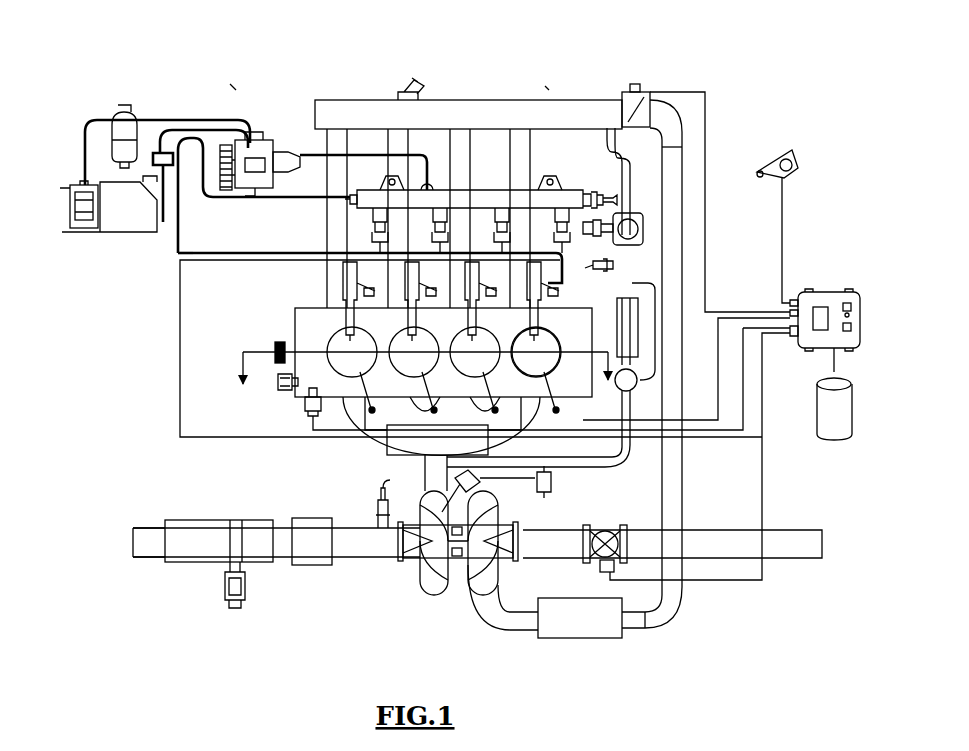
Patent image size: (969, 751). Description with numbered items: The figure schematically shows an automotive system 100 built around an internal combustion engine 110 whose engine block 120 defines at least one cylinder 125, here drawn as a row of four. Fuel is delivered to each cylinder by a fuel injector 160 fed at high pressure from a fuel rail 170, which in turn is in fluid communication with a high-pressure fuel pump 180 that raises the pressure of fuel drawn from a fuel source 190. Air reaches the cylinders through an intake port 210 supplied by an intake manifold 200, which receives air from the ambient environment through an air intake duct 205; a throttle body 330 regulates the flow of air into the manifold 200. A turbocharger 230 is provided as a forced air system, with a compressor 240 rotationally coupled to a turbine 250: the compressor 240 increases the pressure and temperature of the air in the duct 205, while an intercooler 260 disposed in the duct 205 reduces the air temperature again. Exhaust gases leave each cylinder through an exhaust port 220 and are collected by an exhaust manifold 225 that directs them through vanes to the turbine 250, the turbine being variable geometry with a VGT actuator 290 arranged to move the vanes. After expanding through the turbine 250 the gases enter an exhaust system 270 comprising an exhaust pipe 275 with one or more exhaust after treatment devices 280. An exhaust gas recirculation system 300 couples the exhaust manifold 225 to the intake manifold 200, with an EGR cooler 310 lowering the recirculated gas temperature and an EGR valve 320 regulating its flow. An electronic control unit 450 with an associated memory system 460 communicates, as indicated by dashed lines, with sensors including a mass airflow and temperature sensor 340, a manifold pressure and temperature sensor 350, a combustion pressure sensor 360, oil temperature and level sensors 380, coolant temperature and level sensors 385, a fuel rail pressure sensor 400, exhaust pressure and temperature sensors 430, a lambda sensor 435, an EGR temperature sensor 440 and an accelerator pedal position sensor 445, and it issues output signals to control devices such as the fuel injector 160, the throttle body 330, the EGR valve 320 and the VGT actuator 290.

The automotive system 100 is at (234, 86).
The internal combustion engine 110 is at (547, 86).
The engine block 120 is at (293, 312).
The cylinder 125 is at (553, 330).
The fuel injector 160 is at (343, 288).
The fuel rail 170 is at (375, 199).
The high-pressure fuel pump 180 is at (273, 138).
The fuel source 190 is at (127, 216).
The intake manifold 200 is at (463, 98).
The air intake duct 205 is at (790, 546).
The intake port 210 is at (330, 309).
The exhaust port 220 is at (345, 408).
The exhaust manifold 225 is at (412, 442).
The turbocharger 230 is at (430, 600).
The compressor 240 is at (482, 570).
The turbine 250 is at (432, 560).
The intercooler 260 is at (603, 626).
The exhaust system 270 is at (200, 510).
The exhaust pipe 275 is at (140, 540).
The exhaust after treatment device 280 is at (195, 542).
The VGT actuator 290 is at (478, 480).
The exhaust gas recirculation system 300 is at (600, 472).
The EGR cooler 310 is at (677, 502).
The EGR valve 320 is at (636, 225).
The throttle body 330 is at (638, 88).
The mass airflow and temperature sensor 340 is at (608, 562).
The manifold pressure and temperature sensor 350 is at (408, 90).
The combustion pressure sensor 360 is at (410, 447).
The oil temperature and level sensors 380 is at (278, 390).
The coolant temperature and level sensors 385 is at (308, 412).
The fuel rail pressure sensor 400 is at (612, 196).
The exhaust pressure and temperature sensors 430 is at (232, 608).
The lambda sensor 435 is at (380, 522).
The EGR temperature sensor 440 is at (615, 262).
The accelerator pedal position sensor 445 is at (790, 158).
The electronic control unit 450 is at (832, 290).
The memory system 460 is at (835, 418).